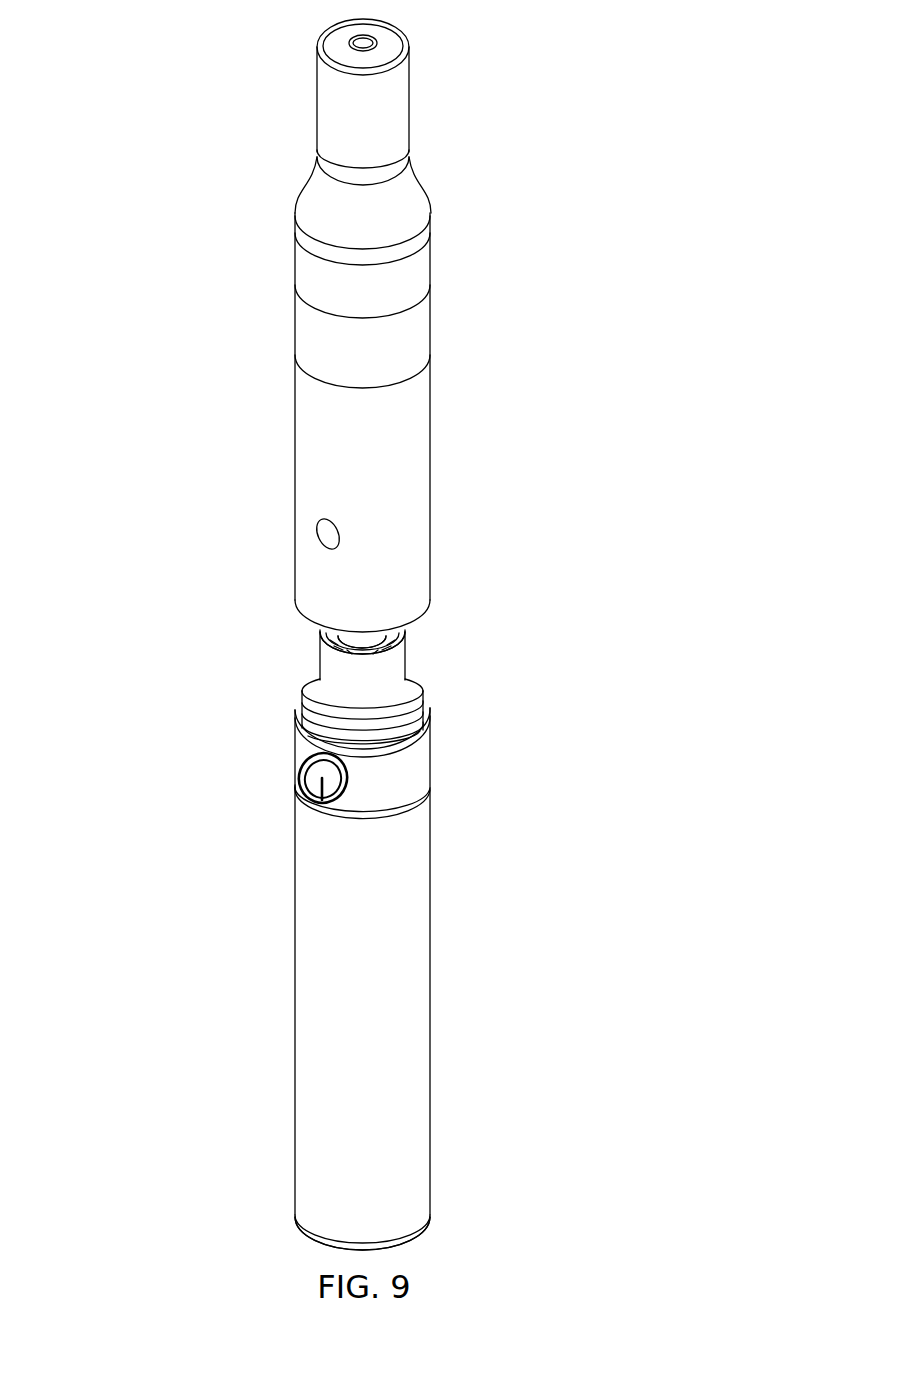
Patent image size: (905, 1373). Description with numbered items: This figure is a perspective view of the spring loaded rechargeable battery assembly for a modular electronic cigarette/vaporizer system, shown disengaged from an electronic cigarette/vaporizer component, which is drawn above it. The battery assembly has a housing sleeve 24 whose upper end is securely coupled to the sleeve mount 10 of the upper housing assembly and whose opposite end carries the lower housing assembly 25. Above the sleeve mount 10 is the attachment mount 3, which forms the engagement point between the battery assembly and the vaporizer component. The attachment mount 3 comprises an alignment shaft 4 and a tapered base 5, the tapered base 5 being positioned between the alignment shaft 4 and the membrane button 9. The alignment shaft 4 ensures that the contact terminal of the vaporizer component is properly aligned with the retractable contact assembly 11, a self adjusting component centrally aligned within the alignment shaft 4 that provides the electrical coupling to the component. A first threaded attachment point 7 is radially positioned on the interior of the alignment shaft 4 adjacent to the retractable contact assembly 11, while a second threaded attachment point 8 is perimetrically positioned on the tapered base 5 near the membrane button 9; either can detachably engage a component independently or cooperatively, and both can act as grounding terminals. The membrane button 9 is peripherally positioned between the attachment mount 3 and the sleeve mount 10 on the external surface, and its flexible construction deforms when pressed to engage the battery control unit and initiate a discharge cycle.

The attachment mount 3 is at (435, 647).
The alignment shaft 4 is at (372, 687).
The tapered base 5 is at (303, 690).
The first threaded attachment point 7 is at (324, 633).
The second threaded attachment point 8 is at (423, 700).
The membrane button 9 is at (297, 764).
The sleeve mount 10 is at (429, 790).
The retractable contact assembly 11 is at (366, 630).
The housing sleeve 24 is at (378, 1056).
The lower housing assembly 25 is at (266, 1224).